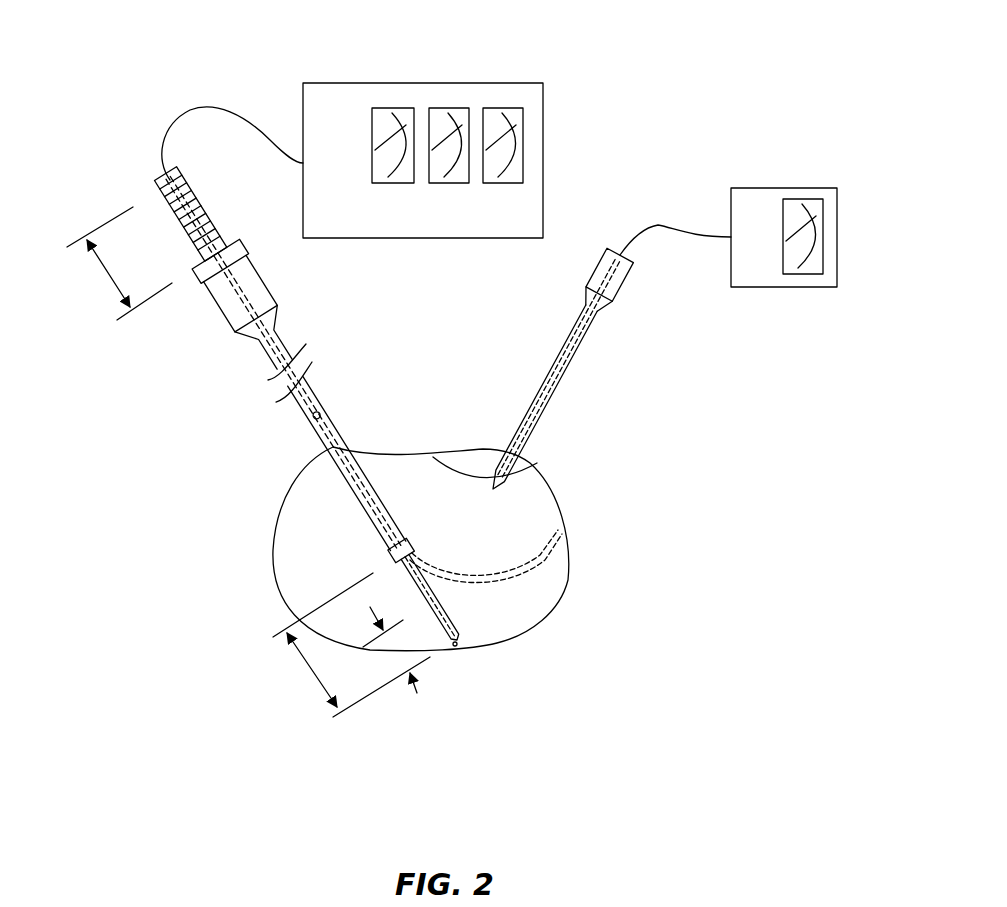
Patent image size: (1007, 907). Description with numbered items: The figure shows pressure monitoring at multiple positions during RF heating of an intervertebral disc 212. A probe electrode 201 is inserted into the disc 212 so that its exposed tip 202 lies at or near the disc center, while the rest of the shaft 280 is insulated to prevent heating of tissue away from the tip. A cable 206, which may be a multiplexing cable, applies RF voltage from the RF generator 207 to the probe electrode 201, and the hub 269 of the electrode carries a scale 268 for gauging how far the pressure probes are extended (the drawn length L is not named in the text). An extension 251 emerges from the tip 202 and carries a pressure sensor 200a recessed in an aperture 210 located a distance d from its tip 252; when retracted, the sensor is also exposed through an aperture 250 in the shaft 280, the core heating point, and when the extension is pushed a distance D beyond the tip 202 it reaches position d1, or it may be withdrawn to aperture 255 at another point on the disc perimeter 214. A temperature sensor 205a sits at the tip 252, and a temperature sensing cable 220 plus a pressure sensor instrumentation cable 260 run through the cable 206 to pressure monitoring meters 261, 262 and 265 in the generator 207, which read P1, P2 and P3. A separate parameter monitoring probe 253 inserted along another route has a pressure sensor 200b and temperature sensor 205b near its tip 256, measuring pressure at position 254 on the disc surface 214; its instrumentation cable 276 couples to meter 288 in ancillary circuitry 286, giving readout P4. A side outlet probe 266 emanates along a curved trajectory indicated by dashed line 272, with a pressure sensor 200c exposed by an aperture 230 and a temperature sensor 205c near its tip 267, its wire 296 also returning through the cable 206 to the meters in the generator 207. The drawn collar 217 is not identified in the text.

The cable 206 is at (197, 110).
The scale 268 is at (168, 210).
The hub 269 is at (220, 307).
The RF generator 207 is at (543, 142).
The pressure monitoring meter 261 is at (392, 108).
The pressure monitoring meter 262 is at (447, 108).
The pressure monitoring meter 265 is at (502, 108).
The pressure sensor instrumentation cable 276 is at (658, 225).
The parameter monitoring probe 253 is at (590, 313).
The pressure monitoring meter 288 is at (807, 199).
The ancillary circuitry 286 is at (797, 287).
The temperature sensing cable 220 is at (283, 338).
The shaft 280 is at (300, 390).
The exposed tip 202 is at (393, 530).
The distal collar 217 is at (403, 550).
The aperture 255 is at (312, 418).
The probe electrode 201 is at (283, 407).
The aperture 210 is at (443, 602).
The pressure sensor 200a is at (453, 607).
The extension 251 is at (457, 625).
The position d1 is at (462, 630).
The temperature sensor 205a is at (458, 642).
The tip 252 is at (455, 647).
The distance d is at (455, 647).
The distance D is at (307, 670).
The length L is at (119, 263).
The intervertebral disc 212 is at (285, 537).
The pressure sensor instrumentation cable 260 is at (330, 447).
The aperture 250 is at (400, 545).
The pressure sensor 200b is at (482, 452).
The temperature sensor 205b is at (492, 478).
The dashed line 272 is at (476, 575).
The tip 256 is at (538, 548).
The aperture 230 is at (557, 535).
The pressure sensor 200c is at (567, 515).
The temperature sensor 205c is at (566, 525).
The tip 267 is at (558, 543).
The side outlet probe 266 is at (540, 567).
The surface 214 is at (567, 578).
The pressure sensor instrumentation cable 296 is at (563, 585).
The position 254 is at (520, 467).